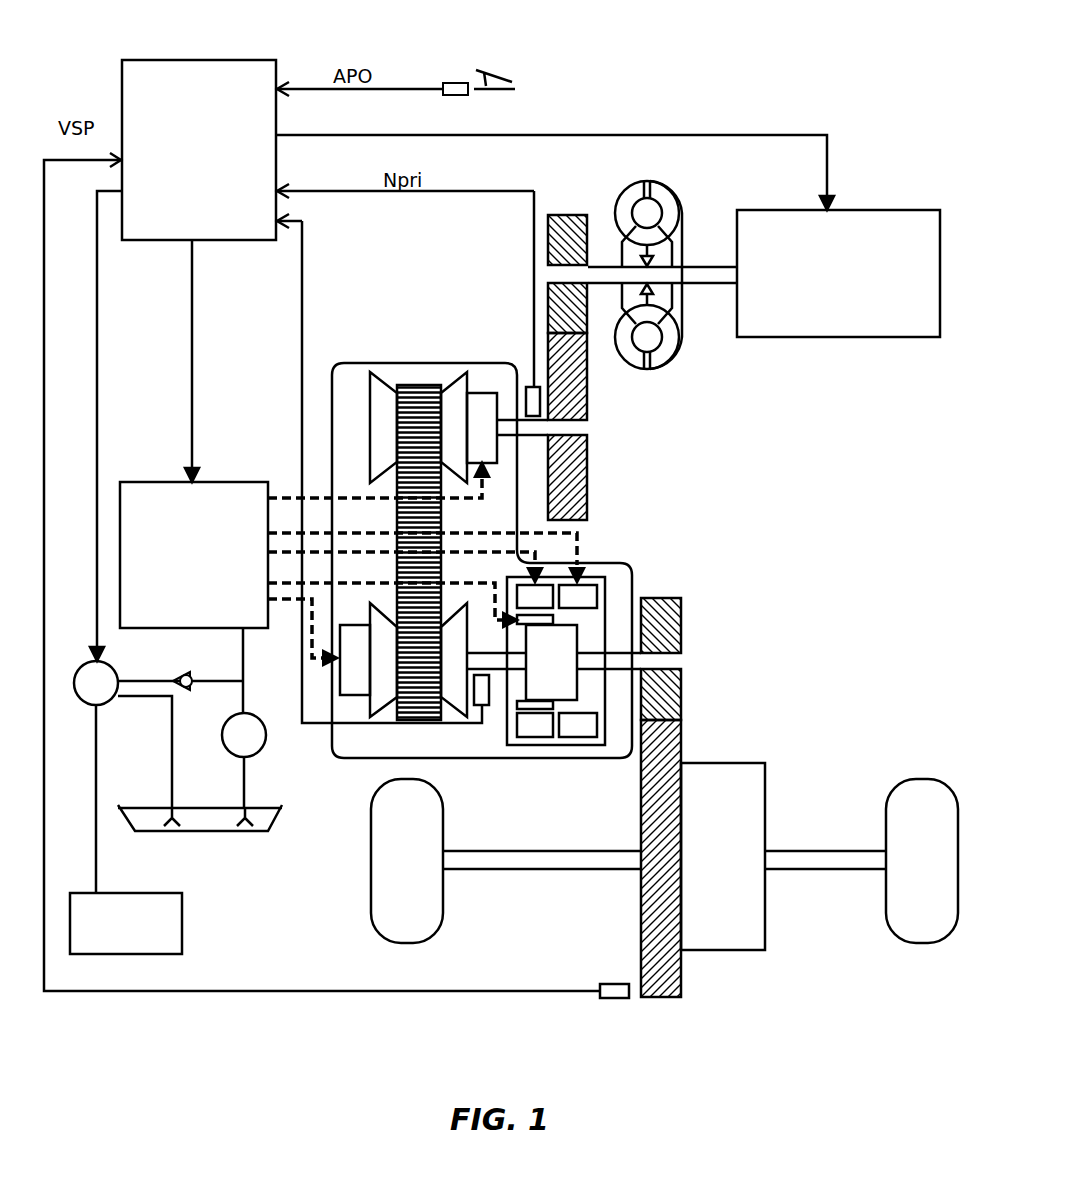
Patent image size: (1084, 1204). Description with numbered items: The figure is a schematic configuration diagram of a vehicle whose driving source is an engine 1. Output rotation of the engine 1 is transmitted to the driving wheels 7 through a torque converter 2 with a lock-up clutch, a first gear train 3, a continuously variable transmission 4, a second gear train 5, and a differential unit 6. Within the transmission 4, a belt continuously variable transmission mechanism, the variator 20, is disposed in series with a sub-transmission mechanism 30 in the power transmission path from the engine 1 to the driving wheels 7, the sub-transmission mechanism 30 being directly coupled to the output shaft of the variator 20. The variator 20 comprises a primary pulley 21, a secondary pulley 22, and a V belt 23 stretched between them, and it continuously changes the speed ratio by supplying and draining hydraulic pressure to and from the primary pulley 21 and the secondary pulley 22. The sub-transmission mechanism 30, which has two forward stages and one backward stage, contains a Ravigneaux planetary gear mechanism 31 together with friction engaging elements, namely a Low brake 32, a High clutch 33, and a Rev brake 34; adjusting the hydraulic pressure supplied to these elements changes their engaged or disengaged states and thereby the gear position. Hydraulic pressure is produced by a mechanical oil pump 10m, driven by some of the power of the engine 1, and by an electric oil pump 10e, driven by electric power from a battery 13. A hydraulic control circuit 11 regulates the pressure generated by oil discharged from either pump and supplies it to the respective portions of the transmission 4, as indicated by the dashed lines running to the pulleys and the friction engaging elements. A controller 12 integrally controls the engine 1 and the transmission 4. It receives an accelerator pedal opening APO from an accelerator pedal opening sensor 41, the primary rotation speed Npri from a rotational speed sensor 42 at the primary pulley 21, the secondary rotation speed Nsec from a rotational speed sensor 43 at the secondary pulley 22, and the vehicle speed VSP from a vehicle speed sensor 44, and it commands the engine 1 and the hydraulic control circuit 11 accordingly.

The engine 1 is at (910, 226).
The torque converter 2 is at (665, 222).
The first gear train 3 is at (555, 208).
The transmission 4 is at (509, 364).
The second gear train 5 is at (658, 1012).
The differential unit 6 is at (720, 940).
The driving wheels 7 is at (405, 925).
The electric oil pump 10e is at (100, 698).
The mechanical oil pump 10m is at (232, 758).
The hydraulic control circuit 11 is at (142, 483).
The controller 12 is at (170, 60).
The battery 13 is at (167, 936).
The variator 20 is at (355, 396).
The primary pulley 21 is at (360, 428).
The secondary pulley 22 is at (417, 712).
The V belt 23 is at (420, 390).
The sub-transmission mechanism 30 is at (612, 580).
The Ravigneaux planetary gear mechanism 31 is at (555, 655).
The Low brake 32 is at (540, 597).
The High clutch 33 is at (545, 705).
The Rev brake 34 is at (578, 597).
The accelerator pedal opening sensor 41 is at (457, 97).
The rotational speed sensor 42 is at (530, 387).
The rotational speed sensor 43 is at (488, 706).
The vehicle speed sensor 44 is at (608, 1000).